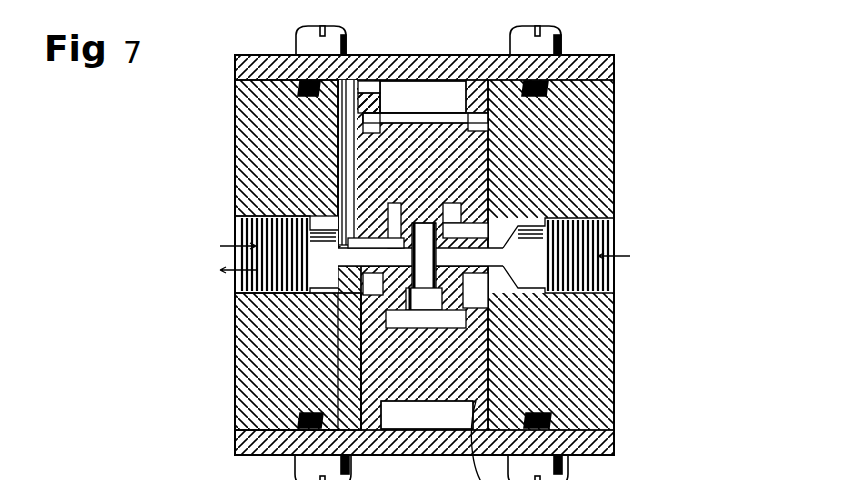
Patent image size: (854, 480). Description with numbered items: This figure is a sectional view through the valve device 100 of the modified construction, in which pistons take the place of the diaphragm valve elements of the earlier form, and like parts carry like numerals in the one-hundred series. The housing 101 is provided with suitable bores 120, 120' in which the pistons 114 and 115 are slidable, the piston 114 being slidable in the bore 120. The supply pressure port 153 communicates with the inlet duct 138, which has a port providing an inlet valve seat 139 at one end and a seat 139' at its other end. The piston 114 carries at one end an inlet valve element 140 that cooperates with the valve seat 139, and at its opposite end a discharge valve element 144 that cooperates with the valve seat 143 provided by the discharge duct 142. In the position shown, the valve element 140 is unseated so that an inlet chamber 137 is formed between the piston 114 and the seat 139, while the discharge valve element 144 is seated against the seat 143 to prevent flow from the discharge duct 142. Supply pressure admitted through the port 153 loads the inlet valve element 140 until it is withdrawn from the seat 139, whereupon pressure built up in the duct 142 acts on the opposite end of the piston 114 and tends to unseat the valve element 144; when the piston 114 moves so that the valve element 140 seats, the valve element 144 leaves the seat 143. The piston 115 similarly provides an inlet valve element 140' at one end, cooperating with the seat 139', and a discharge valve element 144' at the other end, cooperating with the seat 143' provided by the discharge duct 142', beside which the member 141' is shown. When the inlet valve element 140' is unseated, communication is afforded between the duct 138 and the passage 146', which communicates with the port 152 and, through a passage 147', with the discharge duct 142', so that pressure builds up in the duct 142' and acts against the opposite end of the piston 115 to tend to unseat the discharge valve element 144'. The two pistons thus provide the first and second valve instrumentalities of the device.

The valve assembly 100 is at (637, 75).
The housing 101 is at (607, 135).
The piston 114 is at (355, 330).
The piston 115 is at (355, 170).
The bore 120 is at (280, 361).
The upper body block 120' is at (276, 148).
The inlet chamber 137 is at (480, 345).
The inlet duct 138 is at (480, 212).
The inlet valve seat 139 is at (515, 299).
The seat 139' is at (508, 202).
The inlet valve element 140 is at (536, 312).
The inlet valve element 140' is at (557, 206).
The upper retaining plate 141' is at (425, 113).
The discharge duct 142 is at (427, 415).
The discharge duct 142' is at (423, 97).
The valve seat 143 is at (426, 440).
The seat 143' is at (412, 97).
The discharge valve element 144 is at (427, 415).
The discharge valve element 144' is at (425, 116).
The passage 146' is at (348, 173).
The passage 147' is at (374, 75).
The port 152 is at (238, 278).
The supply pressure port 153 is at (606, 215).